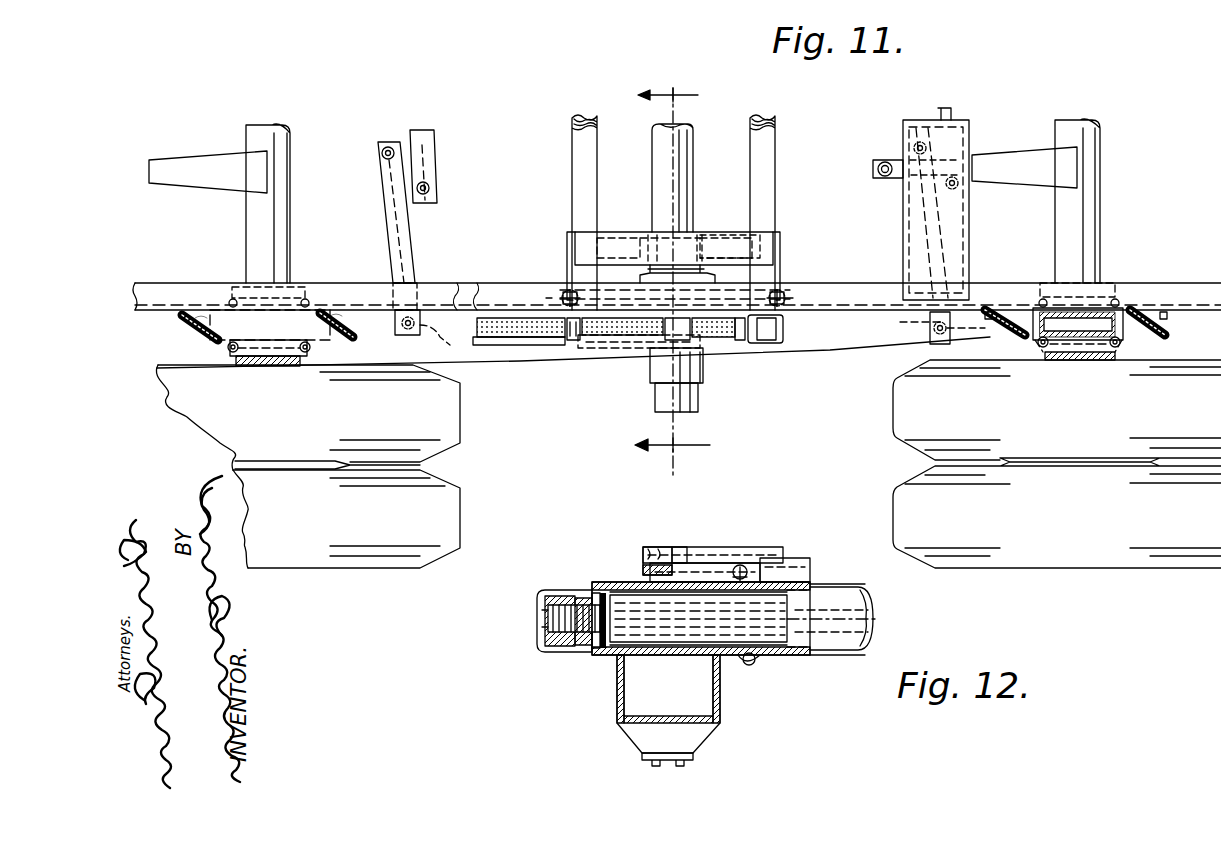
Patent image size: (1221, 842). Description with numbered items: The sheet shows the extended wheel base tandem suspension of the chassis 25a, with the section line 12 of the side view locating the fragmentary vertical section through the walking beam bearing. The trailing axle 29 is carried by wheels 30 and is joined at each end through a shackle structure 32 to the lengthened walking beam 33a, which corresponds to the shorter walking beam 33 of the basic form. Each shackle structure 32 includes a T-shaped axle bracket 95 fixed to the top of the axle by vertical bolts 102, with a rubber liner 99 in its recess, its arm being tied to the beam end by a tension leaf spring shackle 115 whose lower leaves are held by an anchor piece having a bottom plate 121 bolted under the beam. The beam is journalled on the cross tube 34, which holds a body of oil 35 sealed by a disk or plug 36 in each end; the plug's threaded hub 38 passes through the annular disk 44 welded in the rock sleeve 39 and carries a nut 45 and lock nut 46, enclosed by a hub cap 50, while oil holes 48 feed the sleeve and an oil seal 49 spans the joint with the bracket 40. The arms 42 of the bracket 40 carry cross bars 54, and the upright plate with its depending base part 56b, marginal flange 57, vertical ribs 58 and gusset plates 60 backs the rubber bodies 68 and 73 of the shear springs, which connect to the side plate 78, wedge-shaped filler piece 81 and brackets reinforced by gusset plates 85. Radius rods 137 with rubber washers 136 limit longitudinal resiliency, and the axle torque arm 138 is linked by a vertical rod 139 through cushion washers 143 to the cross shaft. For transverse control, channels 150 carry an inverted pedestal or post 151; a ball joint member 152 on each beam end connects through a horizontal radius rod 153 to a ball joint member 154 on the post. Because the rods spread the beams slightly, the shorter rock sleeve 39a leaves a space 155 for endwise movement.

In FIG. 11, the section line 12— 12 is at (672, 270).
In FIG. 11, the chassis 25a is at (162, 258).
In FIG. 11, the trailing axle 29 is at (1092, 127).
In FIG. 11, the wheels 30 is at (454, 460).
In FIG. 11, the shackle structure 32 is at (178, 331).
In FIG. 12, the walking beam 33 is at (610, 698).
In FIG. 11, the walking beam 33a is at (822, 348).
In FIG. 11, the cross tube 34 is at (660, 138).
In FIG. 12, the cross tube 34 is at (858, 612).
In FIG. 12, the body of oil 35 is at (782, 634).
In FIG. 12, the disk or plug 36 is at (612, 621).
In FIG. 12, the threaded hub 38 is at (544, 620).
In FIG. 11, the bearing or rock sleeve 39 is at (702, 368).
In FIG. 12, the bearing or rock sleeve 39 is at (644, 658).
In FIG. 12, the rock sleeve 39a is at (604, 592).
In FIG. 11, the bracket 40 is at (732, 212).
In FIG. 12, the bracket 40 is at (789, 556).
In FIG. 11, the arms 42 is at (636, 231).
In FIG. 12, the annular disk 44 is at (597, 650).
In FIG. 12, the nut 45 is at (582, 652).
In FIG. 12, the lock nut 46 is at (560, 590).
In FIG. 12, the oil holes 48 is at (670, 644).
In FIG. 12, the oil seal 49 is at (742, 566).
In FIG. 11, the hub cap 50 is at (698, 403).
In FIG. 11, the cross bars 54 is at (571, 116).
In FIG. 12, the cross bars 54 is at (860, 584).
In FIG. 12, the depending base part 56b is at (684, 550).
In FIG. 11, the marginal flange 57 is at (562, 348).
In FIG. 12, the marginal flange 57 is at (650, 550).
In FIG. 11, the vertical ribs 58 is at (745, 344).
In FIG. 11, the gusset plates 60 is at (568, 246).
In FIG. 12, the gusset plates 60 is at (714, 550).
In FIG. 11, the rubber body 68 is at (618, 336).
In FIG. 11, the rubber body 73 is at (528, 338).
In FIG. 11, the side plate 78 is at (478, 292).
In FIG. 11, the wedge-shaped filler piece 81 is at (452, 268).
In FIG. 11, the gusset plates 85 is at (783, 325).
In FIG. 11, the axle bracket 95 is at (276, 326).
In FIG. 11, the rubber liner 99 is at (256, 268).
In FIG. 11, the vertical bolts 102 is at (224, 355).
In FIG. 11, the tension leaf spring shackles 115 is at (198, 310).
In FIG. 12, the bottom plate 121 is at (670, 757).
In FIG. 11, the rubber washers or beads 136 is at (566, 288).
In FIG. 11, the radius rods 137 is at (640, 256).
In FIG. 11, the axle torque arm 138 is at (172, 140).
In FIG. 11, the vertical rod 139 is at (876, 162).
In FIG. 11, the cushion washers 143 is at (878, 166).
In FIG. 11, the channels 150 is at (968, 252).
In FIG. 11, the inverted pedestal or post 151 is at (903, 200).
In FIG. 11, the ball joint member 152 is at (930, 330).
In FIG. 11, the radius rod 153 is at (424, 130).
In FIG. 11, the ball joint member 154 is at (392, 140).
In FIG. 12, the space 155 is at (746, 664).